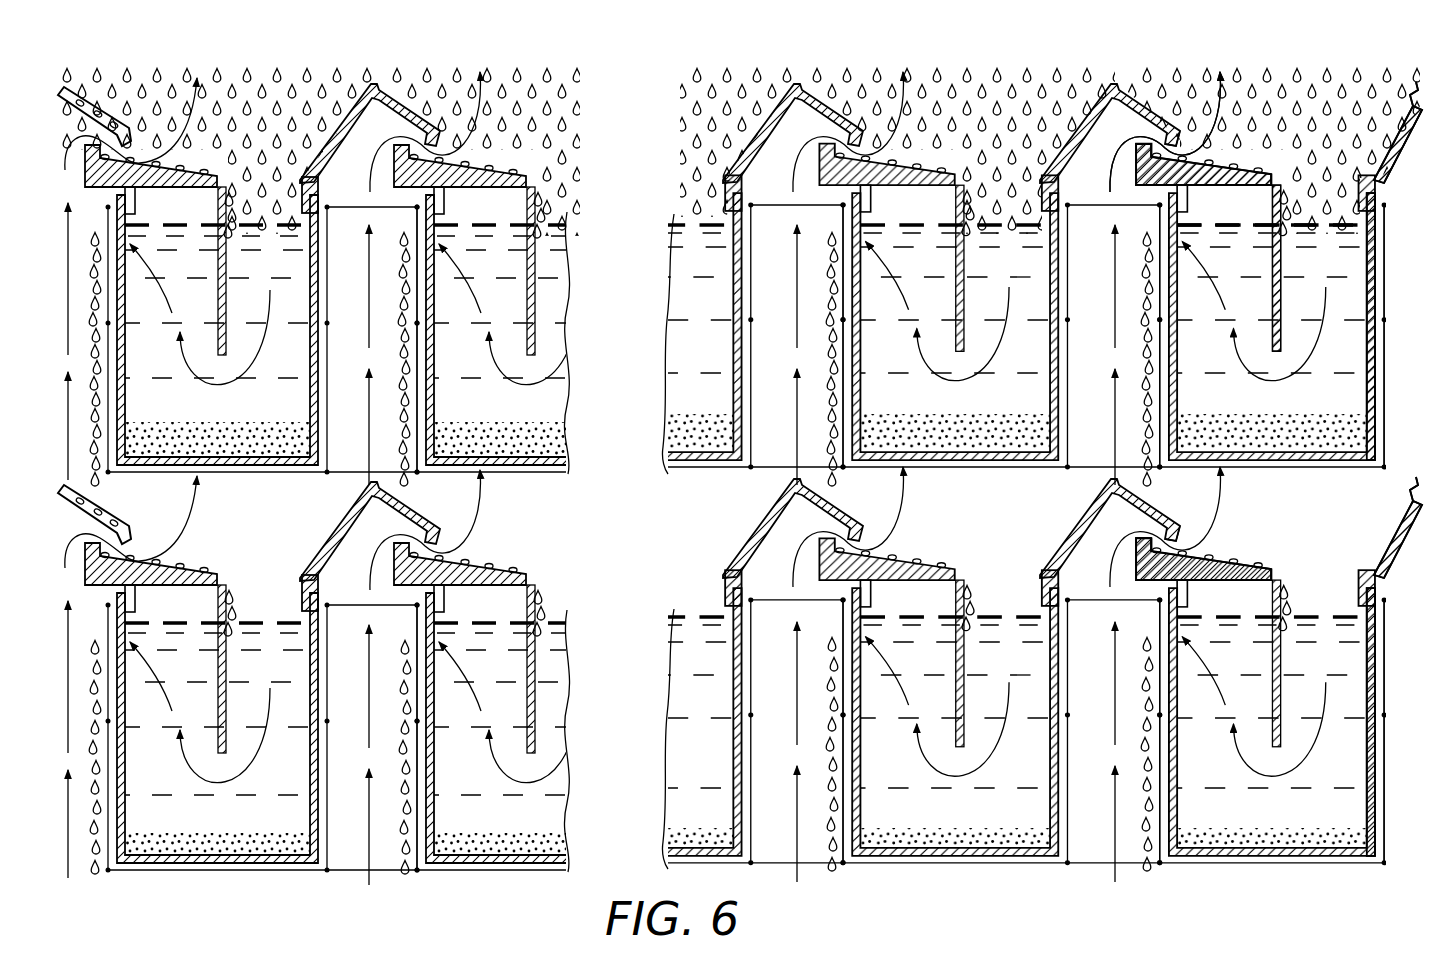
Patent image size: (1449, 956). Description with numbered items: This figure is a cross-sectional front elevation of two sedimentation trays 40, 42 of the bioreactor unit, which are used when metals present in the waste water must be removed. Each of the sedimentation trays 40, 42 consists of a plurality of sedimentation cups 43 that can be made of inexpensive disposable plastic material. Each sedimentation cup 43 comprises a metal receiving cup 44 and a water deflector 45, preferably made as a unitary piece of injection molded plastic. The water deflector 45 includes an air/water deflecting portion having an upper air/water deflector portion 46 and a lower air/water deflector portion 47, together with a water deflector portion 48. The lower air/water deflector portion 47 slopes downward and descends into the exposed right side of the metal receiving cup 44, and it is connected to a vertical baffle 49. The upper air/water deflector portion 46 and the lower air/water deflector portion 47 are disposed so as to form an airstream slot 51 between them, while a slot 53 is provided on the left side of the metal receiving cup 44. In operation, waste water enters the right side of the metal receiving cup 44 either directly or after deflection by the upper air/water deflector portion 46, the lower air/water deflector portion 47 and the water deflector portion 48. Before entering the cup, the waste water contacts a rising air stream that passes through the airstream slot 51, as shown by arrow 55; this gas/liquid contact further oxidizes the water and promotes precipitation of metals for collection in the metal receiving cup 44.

The sedimentation tray 40 is at (1389, 462).
The sedimentation tray 42 is at (1391, 805).
The sedimentation cup 43 is at (1387, 292).
The metal receiving cup 44 is at (1378, 262).
The water deflector 45 is at (1418, 92).
The upper air/water deflector portion 46 is at (1168, 134).
The lower air/water deflector portion 47 is at (1258, 168).
The water deflector portion 48 is at (1400, 148).
The vertical baffle 49 is at (1281, 341).
The airstream slot 51 is at (1243, 82).
The slot 53 is at (1200, 225).
The arrow 55 is at (1094, 322).